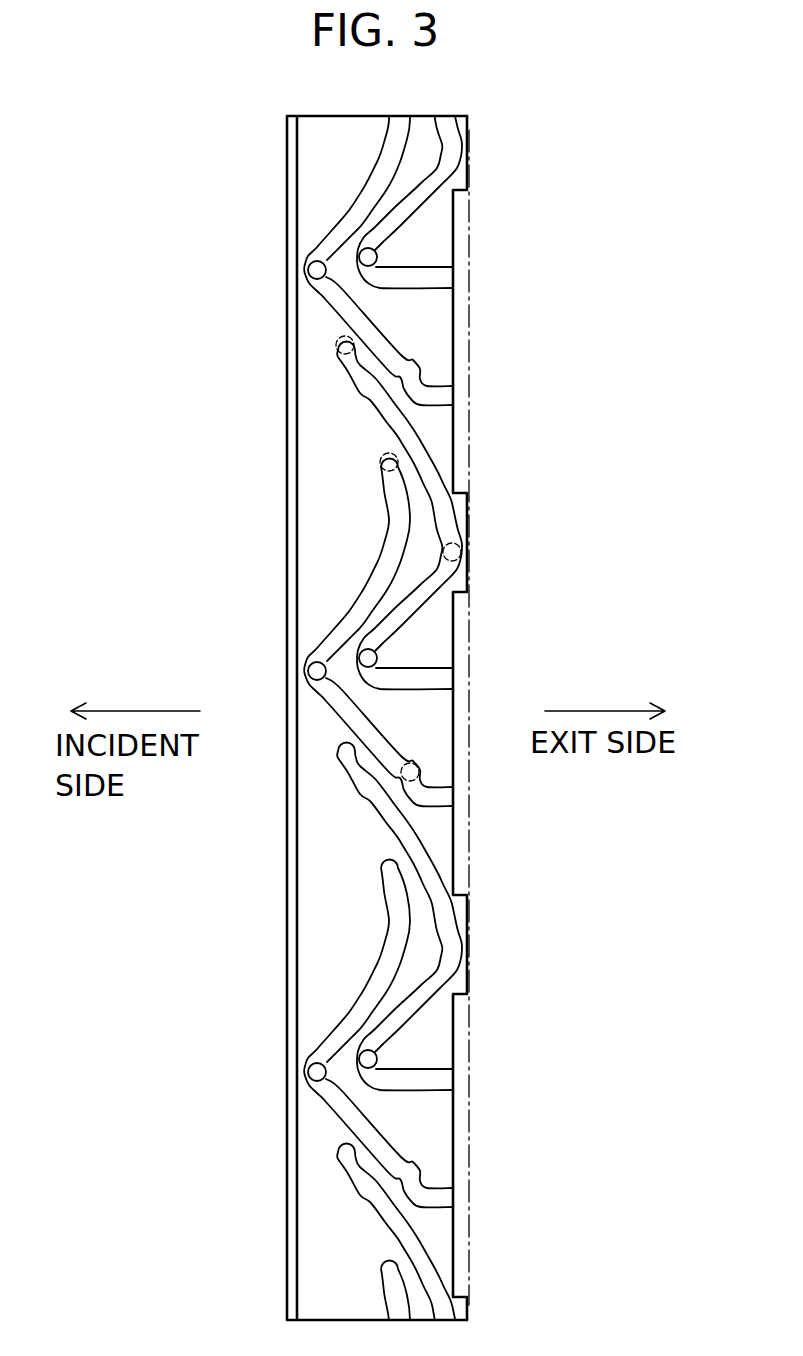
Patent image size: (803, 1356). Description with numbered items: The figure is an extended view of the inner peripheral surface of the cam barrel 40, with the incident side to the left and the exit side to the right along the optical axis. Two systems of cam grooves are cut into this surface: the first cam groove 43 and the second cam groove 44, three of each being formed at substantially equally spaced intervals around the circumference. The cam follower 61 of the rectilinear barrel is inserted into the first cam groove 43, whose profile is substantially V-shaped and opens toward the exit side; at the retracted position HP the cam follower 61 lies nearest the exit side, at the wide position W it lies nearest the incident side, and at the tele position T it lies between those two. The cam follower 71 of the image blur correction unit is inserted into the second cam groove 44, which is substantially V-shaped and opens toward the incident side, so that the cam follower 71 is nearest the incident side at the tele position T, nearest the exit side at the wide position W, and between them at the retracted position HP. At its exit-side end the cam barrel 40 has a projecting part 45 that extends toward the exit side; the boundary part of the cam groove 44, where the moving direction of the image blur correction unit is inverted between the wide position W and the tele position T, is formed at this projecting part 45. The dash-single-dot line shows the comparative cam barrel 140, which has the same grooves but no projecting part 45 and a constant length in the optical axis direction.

The cam barrel 40 is at (203, 380).
The first cam groove 43 is at (345, 222).
The second cam groove 44 is at (412, 214).
The projecting part 45 is at (470, 150).
The cam follower 61 is at (308, 269).
The cam follower 71 is at (377, 257).
The comparative cam barrel 140 is at (470, 1086).
The tele position T is at (356, 345).
The wide position W is at (462, 552).
The retracted position HP is at (378, 658).